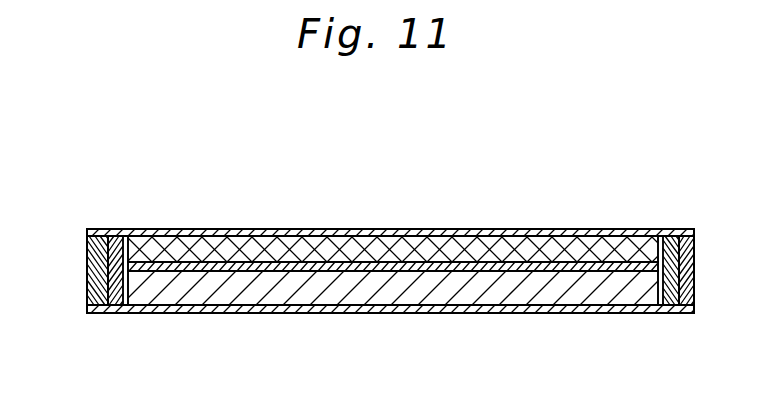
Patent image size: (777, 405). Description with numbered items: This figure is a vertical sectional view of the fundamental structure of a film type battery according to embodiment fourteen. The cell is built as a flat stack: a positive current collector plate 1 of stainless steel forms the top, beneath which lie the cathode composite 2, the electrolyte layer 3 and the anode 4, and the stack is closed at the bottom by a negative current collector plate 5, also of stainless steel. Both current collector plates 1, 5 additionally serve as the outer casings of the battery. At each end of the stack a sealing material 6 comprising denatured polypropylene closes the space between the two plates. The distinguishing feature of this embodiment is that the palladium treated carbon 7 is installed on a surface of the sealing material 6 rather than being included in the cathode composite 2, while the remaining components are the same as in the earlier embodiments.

The positive current collector plate 1 is at (497, 229).
The cathode composite 2 is at (268, 229).
The electrolyte layer 3 is at (571, 262).
The anode 4 is at (530, 290).
The negative current collector plate 5 is at (422, 310).
The sealing material 6 is at (87, 273).
The palladium treated carbon 7 is at (117, 229).